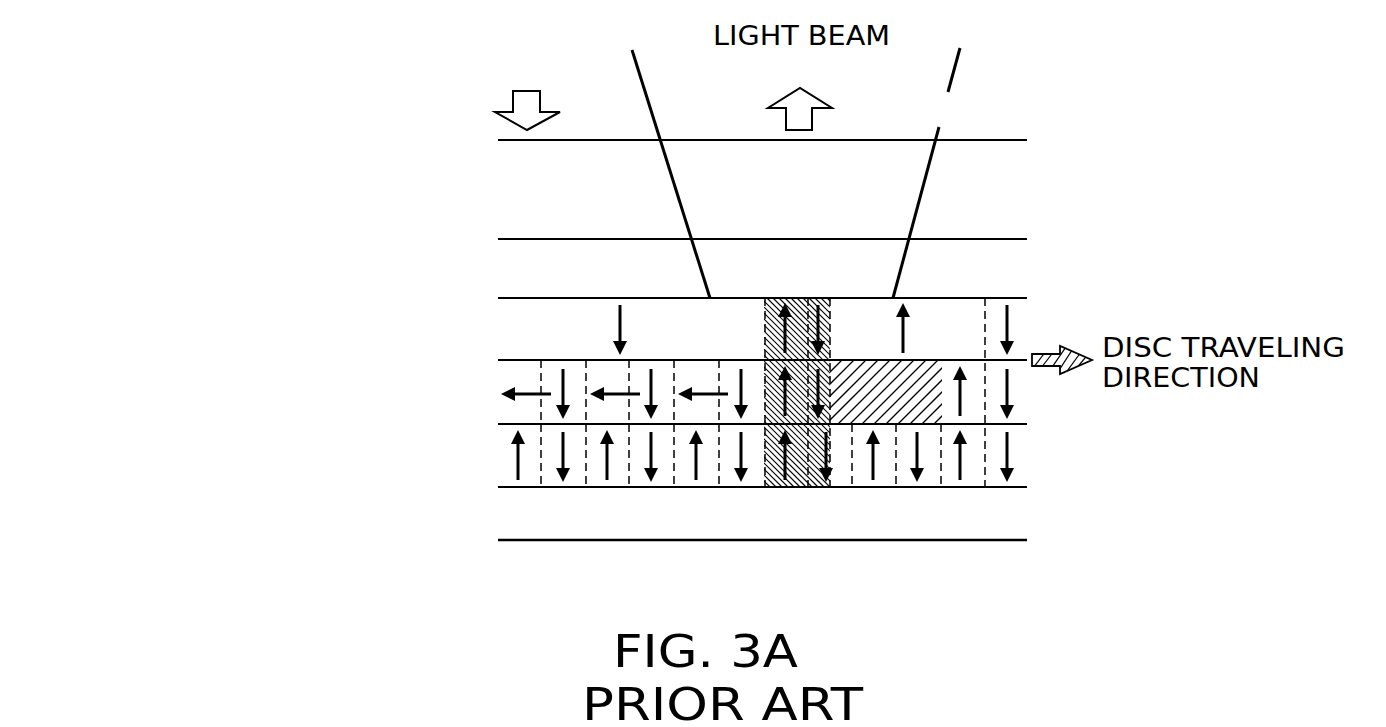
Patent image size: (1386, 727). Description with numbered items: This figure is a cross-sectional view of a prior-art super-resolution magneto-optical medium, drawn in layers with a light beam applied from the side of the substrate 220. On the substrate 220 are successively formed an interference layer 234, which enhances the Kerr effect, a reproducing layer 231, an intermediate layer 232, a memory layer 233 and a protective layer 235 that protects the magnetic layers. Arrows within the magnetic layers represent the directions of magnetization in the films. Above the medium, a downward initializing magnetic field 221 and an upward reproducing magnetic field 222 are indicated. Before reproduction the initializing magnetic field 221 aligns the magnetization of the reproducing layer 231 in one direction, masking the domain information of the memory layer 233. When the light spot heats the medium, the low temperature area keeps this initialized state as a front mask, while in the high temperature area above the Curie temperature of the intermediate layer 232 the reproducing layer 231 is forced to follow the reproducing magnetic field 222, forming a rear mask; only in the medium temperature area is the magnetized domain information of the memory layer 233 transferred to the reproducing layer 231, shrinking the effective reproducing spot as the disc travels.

The substrate 220 is at (624, 189).
The initializing magnetic field 221 is at (374, 112).
The reproducing magnetic field 222 is at (1056, 109).
The reproducing layer 231 is at (557, 329).
The intermediate layer 232 is at (556, 392).
The memory layer 233 is at (604, 455).
The interference layer 234 is at (545, 268).
The protective layer 235 is at (565, 513).